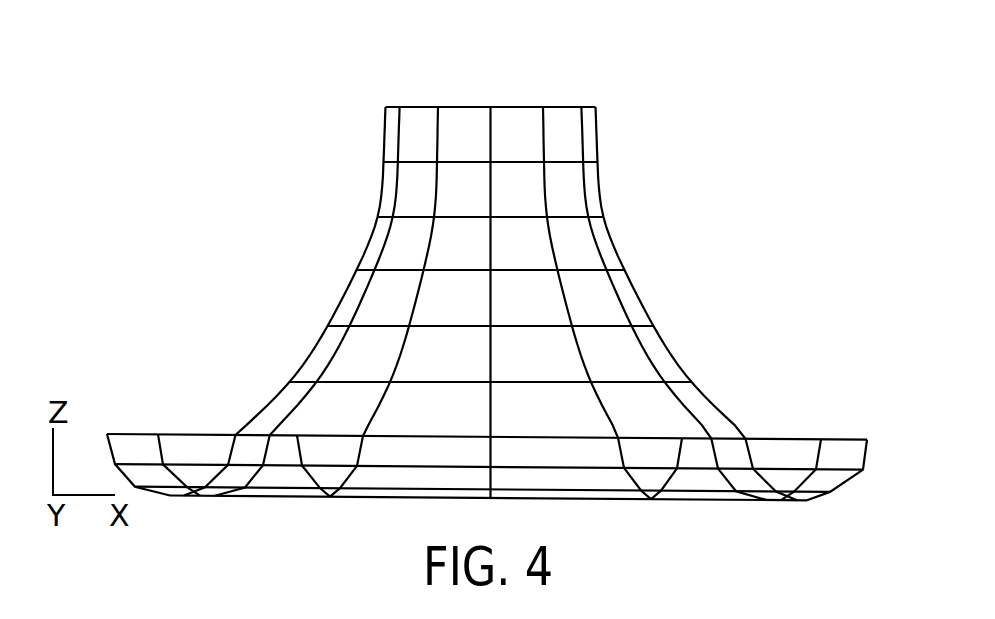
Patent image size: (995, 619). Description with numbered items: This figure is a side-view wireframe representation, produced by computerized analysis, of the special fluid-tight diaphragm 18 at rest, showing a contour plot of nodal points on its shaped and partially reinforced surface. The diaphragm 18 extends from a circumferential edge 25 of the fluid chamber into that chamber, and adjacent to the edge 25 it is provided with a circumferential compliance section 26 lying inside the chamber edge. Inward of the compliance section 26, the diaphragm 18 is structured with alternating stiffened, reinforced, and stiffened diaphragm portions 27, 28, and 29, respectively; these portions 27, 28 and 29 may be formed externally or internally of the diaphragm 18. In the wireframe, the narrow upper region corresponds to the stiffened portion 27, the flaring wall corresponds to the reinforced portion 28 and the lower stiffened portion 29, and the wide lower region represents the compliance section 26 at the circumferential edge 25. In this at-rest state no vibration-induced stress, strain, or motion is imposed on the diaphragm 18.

The fluid-tight diaphragm 18 is at (569, 109).
The circumferential edge 25 is at (867, 440).
The circumferential compliance section 26 is at (762, 503).
The stiffened diaphragm portion 27 is at (385, 107).
The reinforced diaphragm portion 28 is at (370, 232).
The stiffened diaphragm portion 29 is at (237, 433).